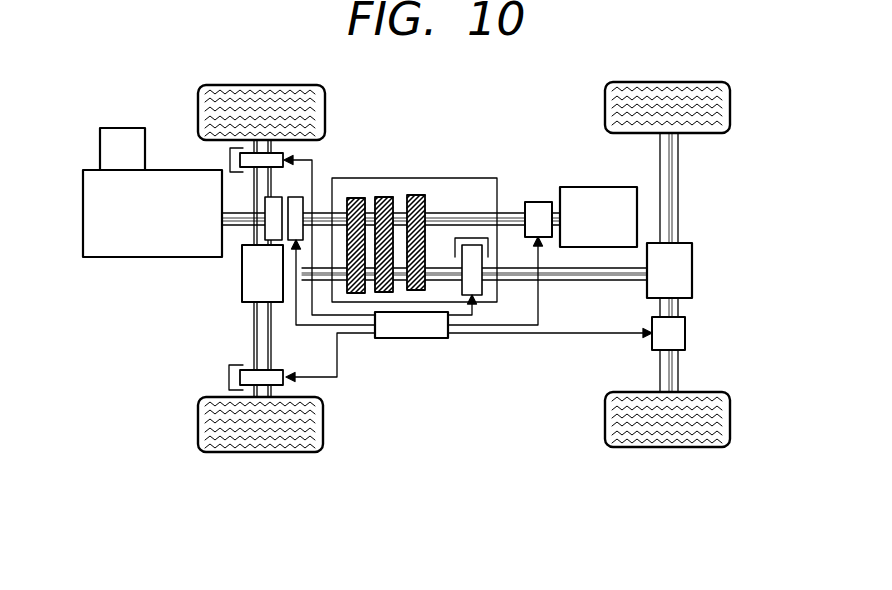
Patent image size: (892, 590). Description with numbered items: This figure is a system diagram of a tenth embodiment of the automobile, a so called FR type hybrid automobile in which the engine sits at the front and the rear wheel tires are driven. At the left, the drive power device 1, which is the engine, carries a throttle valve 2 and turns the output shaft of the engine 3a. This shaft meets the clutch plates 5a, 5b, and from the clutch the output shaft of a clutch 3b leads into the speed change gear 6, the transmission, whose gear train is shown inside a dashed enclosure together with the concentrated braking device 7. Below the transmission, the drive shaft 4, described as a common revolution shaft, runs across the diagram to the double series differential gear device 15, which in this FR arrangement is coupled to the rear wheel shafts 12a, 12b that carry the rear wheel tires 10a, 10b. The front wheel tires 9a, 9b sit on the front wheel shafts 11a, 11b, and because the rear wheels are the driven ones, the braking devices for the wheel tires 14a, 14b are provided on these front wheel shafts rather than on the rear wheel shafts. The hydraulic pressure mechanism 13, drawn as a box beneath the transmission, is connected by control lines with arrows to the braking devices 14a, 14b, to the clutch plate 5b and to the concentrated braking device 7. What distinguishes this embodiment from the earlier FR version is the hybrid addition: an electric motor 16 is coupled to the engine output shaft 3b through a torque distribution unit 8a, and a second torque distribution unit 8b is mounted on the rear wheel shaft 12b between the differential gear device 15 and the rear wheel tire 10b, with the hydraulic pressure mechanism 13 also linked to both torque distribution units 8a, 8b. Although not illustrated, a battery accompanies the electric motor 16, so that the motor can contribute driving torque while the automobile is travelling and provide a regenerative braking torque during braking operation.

The drive power device 1 is at (92, 205).
The throttle valve 2 is at (102, 148).
The output shaft of the engine 3a is at (240, 222).
The output shaft of a clutch 3b is at (318, 214).
The drive shaft 4 is at (507, 276).
The clutch plate 5a is at (275, 197).
The clutch plate 5b is at (305, 197).
The speed change gear 6 is at (447, 178).
The concentrated braking device 7 is at (472, 245).
The torque distribution unit 8a is at (537, 202).
The torque distribution unit 8b is at (678, 332).
The front wheel tire 9a is at (247, 93).
The front wheel tire 9b is at (240, 433).
The rear wheel tire 10a is at (657, 93).
The rear wheel tire 10b is at (645, 430).
The front wheel shaft 11a is at (253, 147).
The front wheel shaft 11b is at (257, 338).
The rear wheel shaft 12a is at (678, 195).
The rear wheel shaft 12b is at (678, 308).
The hydraulic pressure mechanism 13 is at (405, 338).
The braking device for the wheel tires 14a is at (230, 158).
The braking device for the wheel tires 14b is at (229, 378).
The double series differential gear device 15 is at (682, 272).
The electric motor 16 is at (600, 193).